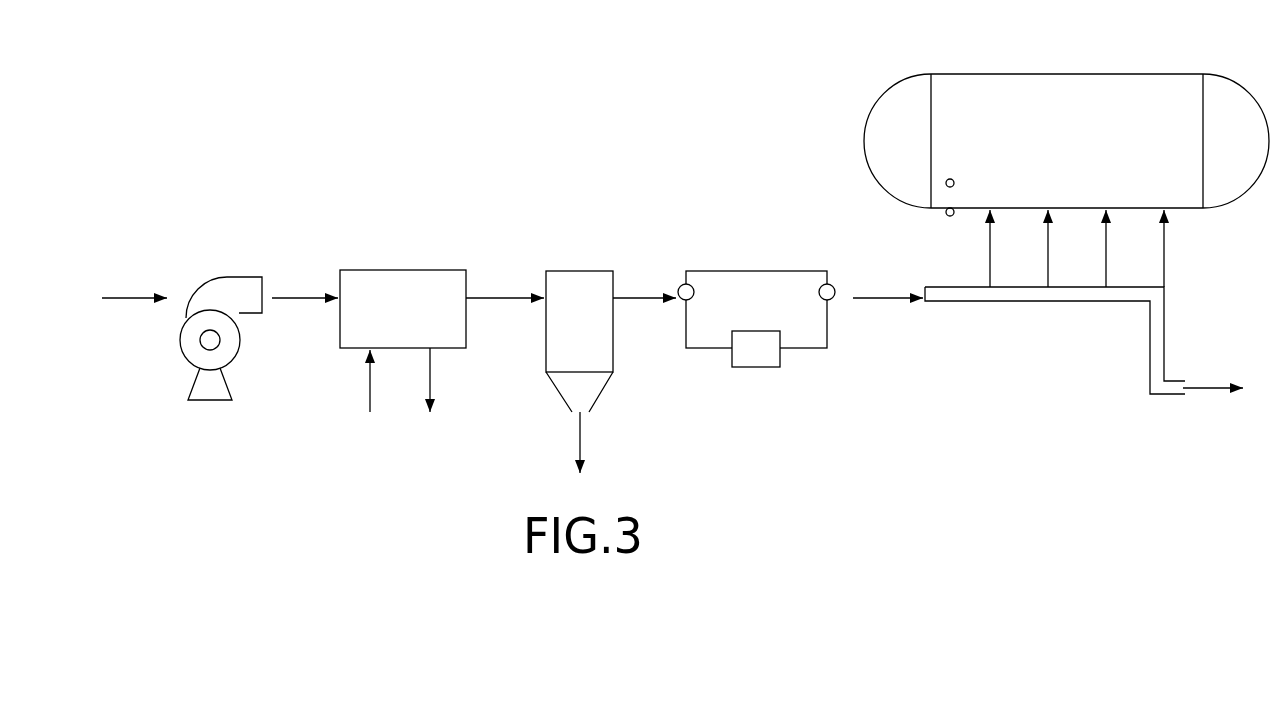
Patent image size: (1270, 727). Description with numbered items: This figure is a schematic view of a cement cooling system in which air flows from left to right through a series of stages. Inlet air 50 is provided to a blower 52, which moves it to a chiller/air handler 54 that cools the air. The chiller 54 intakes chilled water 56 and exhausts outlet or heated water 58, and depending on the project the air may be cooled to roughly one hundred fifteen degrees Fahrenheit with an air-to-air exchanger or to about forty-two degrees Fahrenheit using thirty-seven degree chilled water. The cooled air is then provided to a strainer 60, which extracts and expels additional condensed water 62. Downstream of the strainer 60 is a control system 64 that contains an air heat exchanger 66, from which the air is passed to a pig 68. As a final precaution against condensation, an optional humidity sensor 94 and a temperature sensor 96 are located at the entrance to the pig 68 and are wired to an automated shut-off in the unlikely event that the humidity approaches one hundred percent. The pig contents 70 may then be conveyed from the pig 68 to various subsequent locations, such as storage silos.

The inlet air 50 is at (134, 280).
The blower 52 is at (243, 277).
The chiller/air handler 54 is at (408, 277).
The chilled water 56 is at (370, 398).
The outlet or heated water 58 is at (430, 397).
The strainer 60 is at (579, 277).
The condensed water 62 is at (581, 432).
The control system 64 is at (748, 277).
The air heat exchanger 66 is at (752, 359).
The pig 68 is at (1026, 83).
The pig contents 70 is at (1213, 407).
The humidity sensor 94 is at (947, 216).
The temperature sensor 96 is at (954, 181).